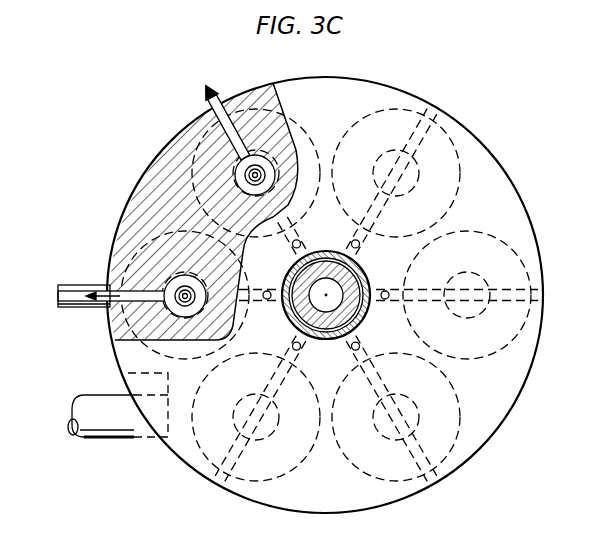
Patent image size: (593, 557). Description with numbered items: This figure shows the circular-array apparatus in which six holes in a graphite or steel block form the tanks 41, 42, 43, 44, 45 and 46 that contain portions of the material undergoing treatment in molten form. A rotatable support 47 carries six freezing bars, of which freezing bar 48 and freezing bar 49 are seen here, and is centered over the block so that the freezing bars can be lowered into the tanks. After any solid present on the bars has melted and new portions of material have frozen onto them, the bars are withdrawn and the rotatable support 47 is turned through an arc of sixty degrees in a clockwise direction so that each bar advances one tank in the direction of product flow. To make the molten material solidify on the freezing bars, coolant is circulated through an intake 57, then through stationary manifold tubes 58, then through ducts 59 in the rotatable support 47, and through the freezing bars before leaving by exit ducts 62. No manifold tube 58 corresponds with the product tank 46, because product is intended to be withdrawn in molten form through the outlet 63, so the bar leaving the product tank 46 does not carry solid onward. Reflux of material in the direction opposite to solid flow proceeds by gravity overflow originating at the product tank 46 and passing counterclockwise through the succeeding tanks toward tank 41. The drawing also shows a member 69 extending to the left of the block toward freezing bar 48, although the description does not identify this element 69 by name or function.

The tank 41 is at (144, 246).
The tank 42 is at (192, 211).
The tank 43 is at (403, 108).
The tank 44 is at (523, 262).
The tank 45 is at (455, 452).
The product tank 46 is at (253, 481).
The rotatable support 47 is at (457, 128).
The freezing bar 48 is at (166, 288).
The freezing bar 49 is at (247, 175).
The intake 57 is at (326, 295).
The stationary manifold tubes 58 is at (366, 265).
The ducts 59 is at (363, 322).
The exit ducts 62 is at (213, 98).
The outlet 63 is at (102, 408).
The rod 69 is at (58, 294).